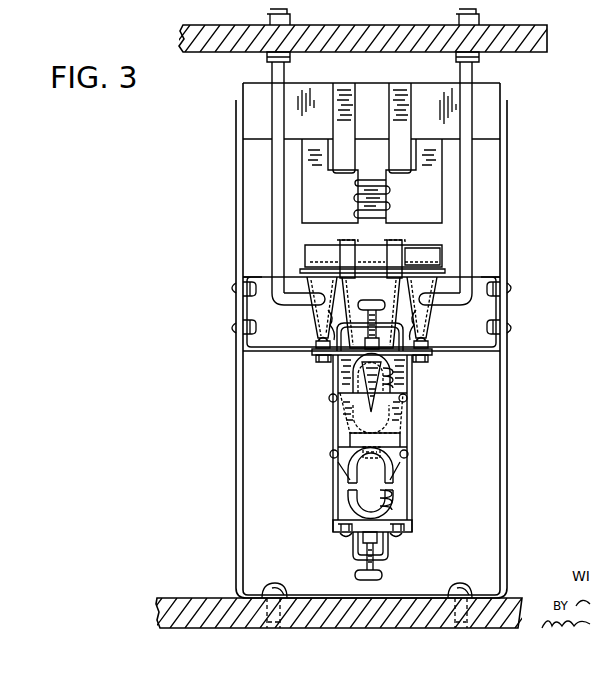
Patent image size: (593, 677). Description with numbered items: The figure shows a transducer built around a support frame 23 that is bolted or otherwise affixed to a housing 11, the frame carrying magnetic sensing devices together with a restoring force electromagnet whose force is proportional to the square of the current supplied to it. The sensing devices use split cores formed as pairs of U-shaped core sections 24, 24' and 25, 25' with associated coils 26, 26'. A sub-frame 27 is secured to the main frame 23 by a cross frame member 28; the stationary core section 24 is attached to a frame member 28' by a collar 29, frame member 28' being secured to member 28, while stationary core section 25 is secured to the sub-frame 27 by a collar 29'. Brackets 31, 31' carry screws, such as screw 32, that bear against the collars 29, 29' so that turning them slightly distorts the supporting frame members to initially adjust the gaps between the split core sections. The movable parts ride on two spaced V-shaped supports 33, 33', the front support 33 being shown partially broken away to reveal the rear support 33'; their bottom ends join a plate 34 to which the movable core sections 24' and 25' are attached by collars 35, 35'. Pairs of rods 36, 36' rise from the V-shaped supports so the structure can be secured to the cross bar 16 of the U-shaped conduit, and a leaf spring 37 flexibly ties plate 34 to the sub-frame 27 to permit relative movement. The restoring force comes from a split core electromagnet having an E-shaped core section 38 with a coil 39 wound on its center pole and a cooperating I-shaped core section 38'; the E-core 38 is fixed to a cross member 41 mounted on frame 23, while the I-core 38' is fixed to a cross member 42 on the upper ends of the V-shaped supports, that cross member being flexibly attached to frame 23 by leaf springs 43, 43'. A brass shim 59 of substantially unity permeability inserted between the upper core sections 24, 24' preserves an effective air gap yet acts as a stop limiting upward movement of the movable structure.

The housing 11 is at (181, 583).
The cross bar 16 is at (538, 53).
The support frame 23 is at (507, 388).
The U-shaped core section 24 is at (355, 383).
The U-shaped core section 24' is at (337, 388).
The U-shaped core section 25 is at (348, 501).
The U-shaped core section 25' is at (344, 467).
The coil 26 is at (416, 378).
The coil 26' is at (415, 490).
The sub-frame 27 is at (334, 437).
The cross frame member 28 is at (371, 316).
The frame member 28' is at (355, 358).
The collar 29 is at (390, 336).
The collar 29' is at (391, 523).
The bracket 31 is at (370, 312).
The bracket 31' is at (360, 547).
The screw 32 is at (366, 303).
The V-shaped support 33 is at (368, 308).
The V-shaped support 33' is at (372, 345).
The plate 34 is at (396, 440).
The collar 35 is at (353, 413).
The collar 35' is at (406, 458).
The rod 36 is at (387, 151).
The rod 36' is at (391, 248).
The leaf spring 37 is at (338, 458).
The E-shaped core section 38 is at (415, 153).
The I-shaped core section 38' is at (432, 246).
The coil 39 is at (386, 213).
The cross member 41 is at (497, 98).
The cross member 42 is at (310, 268).
The leaf spring 43 is at (350, 268).
The leaf spring 43' is at (513, 268).
The brass shim 59 is at (407, 397).